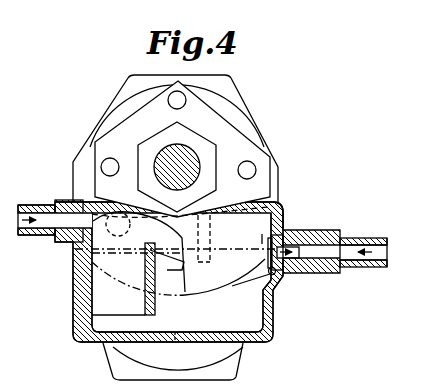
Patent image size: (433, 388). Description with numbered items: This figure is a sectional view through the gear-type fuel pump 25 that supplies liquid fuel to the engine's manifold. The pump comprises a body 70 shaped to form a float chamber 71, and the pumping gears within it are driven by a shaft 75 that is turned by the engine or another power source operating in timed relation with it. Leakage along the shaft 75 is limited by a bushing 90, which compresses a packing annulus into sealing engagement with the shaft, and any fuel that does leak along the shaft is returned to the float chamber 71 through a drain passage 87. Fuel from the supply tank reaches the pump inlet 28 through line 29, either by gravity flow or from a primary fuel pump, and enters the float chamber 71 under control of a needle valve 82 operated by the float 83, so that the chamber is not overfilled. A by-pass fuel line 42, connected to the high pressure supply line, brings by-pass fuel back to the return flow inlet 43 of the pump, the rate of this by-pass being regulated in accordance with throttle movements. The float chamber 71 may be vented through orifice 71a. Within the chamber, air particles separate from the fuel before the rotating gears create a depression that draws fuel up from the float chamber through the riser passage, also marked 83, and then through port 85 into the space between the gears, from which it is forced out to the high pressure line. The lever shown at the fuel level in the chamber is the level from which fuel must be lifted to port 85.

The pump 25 is at (253, 99).
The bushing 90 is at (200, 142).
The shaft 75 is at (192, 160).
The drain passage 87 is at (255, 196).
The orifice 71a is at (288, 212).
The needle valve 82 is at (282, 240).
The pump inlet 28 is at (306, 232).
The line 29 is at (354, 268).
The float chamber 71 is at (250, 317).
The body 70 is at (74, 331).
The return flow inlet 43 is at (62, 200).
The by-pass fuel line 42 is at (40, 232).
The port 85 is at (110, 247).
The float 83 is at (115, 266).